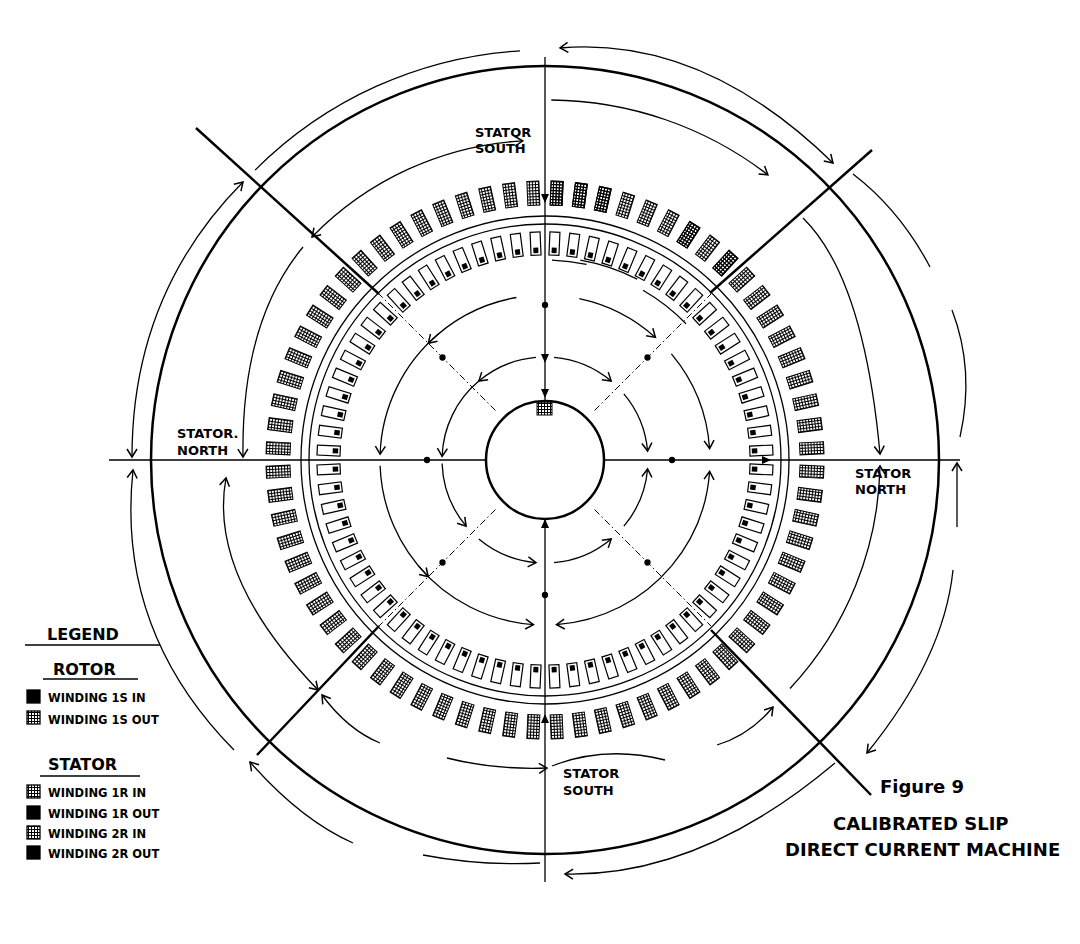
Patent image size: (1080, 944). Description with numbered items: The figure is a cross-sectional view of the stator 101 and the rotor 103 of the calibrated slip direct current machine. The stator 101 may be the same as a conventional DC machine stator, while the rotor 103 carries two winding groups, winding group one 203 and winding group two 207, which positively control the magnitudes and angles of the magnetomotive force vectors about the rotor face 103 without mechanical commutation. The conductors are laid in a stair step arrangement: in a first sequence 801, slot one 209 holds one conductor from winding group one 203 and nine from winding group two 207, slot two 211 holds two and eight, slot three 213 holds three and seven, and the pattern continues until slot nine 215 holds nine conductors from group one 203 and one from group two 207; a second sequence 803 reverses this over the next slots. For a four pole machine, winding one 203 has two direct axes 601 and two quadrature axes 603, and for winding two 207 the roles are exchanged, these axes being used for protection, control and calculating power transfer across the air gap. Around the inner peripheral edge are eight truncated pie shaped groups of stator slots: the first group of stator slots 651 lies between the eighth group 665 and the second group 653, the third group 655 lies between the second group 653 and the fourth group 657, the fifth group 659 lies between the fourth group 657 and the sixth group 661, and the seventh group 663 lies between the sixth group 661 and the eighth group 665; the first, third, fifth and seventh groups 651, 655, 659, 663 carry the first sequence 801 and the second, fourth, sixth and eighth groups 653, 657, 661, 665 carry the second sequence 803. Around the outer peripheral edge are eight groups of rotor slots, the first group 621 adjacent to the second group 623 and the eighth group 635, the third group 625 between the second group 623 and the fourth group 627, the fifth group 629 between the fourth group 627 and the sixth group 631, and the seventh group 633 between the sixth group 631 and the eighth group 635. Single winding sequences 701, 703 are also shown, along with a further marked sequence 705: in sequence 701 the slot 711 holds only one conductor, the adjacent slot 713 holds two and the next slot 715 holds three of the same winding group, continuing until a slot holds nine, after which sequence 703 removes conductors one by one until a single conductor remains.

The stator 101 is at (851, 210).
The rotor 103 is at (674, 212).
The winding group one 203 is at (695, 224).
The winding group two 207 is at (791, 221).
The slot one 209 is at (557, 183).
The slot two 211 is at (581, 185).
The slot three 213 is at (605, 189).
The slot nine 215 is at (732, 253).
The direct axes 601 is at (545, 305).
The quadrature axes 603 is at (647, 357).
The first group of rotor slots 621 is at (582, 369).
The second group of rotor slots 623 is at (634, 422).
The third group of rotor slots 625 is at (632, 497).
The fourth group of rotor slots 627 is at (587, 553).
The fifth group of rotor slots 629 is at (507, 554).
The sixth group of rotor slots 631 is at (456, 495).
The seventh group of rotor slots 633 is at (457, 418).
The eighth group of rotor slots 635 is at (507, 372).
The first group of stator slots 651 is at (659, 137).
The second group of stator slots 653 is at (841, 336).
The third group of stator slots 655 is at (835, 577).
The fourth group of stator slots 657 is at (662, 737).
The fifth group of stator slots 659 is at (434, 732).
The sixth group of stator slots 661 is at (270, 584).
The seventh group of stator slots 663 is at (273, 352).
The eighth group of stator slots 665 is at (417, 189).
The single winding sequence 701 is at (549, 464).
The second single winding sequence 703 is at (551, 489).
The rotor flux arrow 705 is at (472, 321).
The slot 711 is at (580, 272).
The slot 713 is at (620, 282).
The slot 715 is at (675, 316).
The first sequence in stair step arrangement 801 is at (554, 455).
The second sequence in stair step arrangement 803 is at (548, 462).